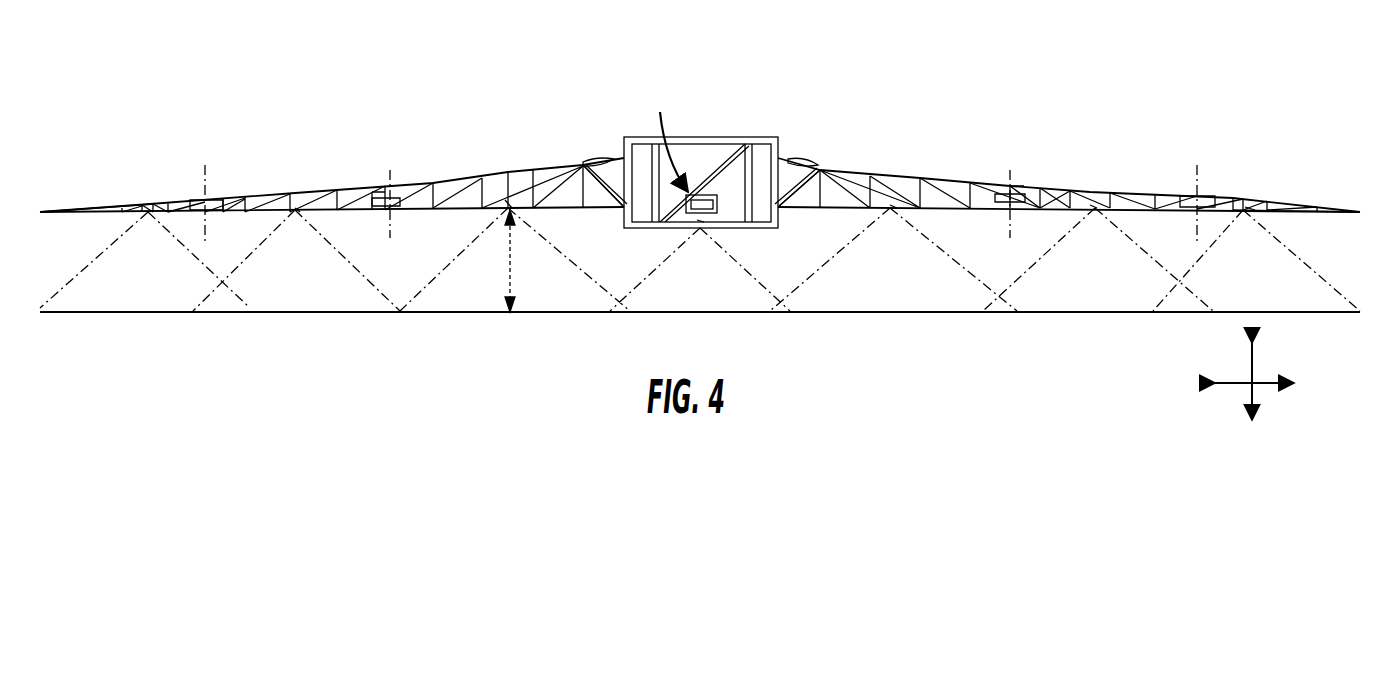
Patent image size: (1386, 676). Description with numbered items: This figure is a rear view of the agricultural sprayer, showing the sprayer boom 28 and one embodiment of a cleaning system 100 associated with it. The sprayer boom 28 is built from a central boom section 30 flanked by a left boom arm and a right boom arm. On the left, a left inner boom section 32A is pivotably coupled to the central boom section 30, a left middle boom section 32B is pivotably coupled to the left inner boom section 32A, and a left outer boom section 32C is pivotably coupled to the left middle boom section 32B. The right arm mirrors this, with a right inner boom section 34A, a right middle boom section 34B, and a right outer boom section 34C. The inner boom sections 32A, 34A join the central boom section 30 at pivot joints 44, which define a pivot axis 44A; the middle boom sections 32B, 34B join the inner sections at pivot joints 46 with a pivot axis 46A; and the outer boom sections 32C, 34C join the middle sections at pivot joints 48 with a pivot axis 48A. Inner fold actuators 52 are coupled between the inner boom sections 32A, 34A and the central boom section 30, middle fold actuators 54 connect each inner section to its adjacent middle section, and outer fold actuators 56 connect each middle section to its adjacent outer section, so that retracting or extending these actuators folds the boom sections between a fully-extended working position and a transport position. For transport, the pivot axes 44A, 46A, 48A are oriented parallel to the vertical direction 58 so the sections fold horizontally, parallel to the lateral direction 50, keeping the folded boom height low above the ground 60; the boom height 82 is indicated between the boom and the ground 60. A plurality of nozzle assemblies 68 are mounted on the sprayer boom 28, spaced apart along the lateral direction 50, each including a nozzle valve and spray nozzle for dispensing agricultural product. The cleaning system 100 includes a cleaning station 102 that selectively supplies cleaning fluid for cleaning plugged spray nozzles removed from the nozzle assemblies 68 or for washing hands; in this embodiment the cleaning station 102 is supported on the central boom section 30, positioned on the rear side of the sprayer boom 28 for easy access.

The sprayer boom 28 is at (372, 118).
The central boom section 30 is at (703, 137).
The left inner boom section 32A is at (490, 178).
The left middle boom section 32B is at (281, 191).
The left outer boom section 32C is at (178, 197).
The right inner boom section 34A is at (888, 173).
The right middle boom section 34B is at (1055, 173).
The right outer boom section 34C is at (1220, 198).
The pivot joint 44 is at (622, 208).
The pivot axis 44A is at (625, 250).
The pivot joint 46 is at (380, 208).
The pivot axis 46A is at (392, 240).
The pivot joint 48 is at (207, 212).
The pivot axis 48A is at (203, 233).
The lateral direction 50 is at (1277, 384).
The inner fold actuator 52 is at (612, 160).
The middle fold actuator 54 is at (425, 183).
The outer fold actuator 56 is at (228, 198).
The vertical direction 58 is at (1252, 408).
The ground surface 60 is at (90, 314).
The nozzle assembly 68 is at (148, 205).
The boom height 82 is at (508, 264).
The cleaning system 100 is at (668, 138).
The cleaning station 102 is at (690, 214).